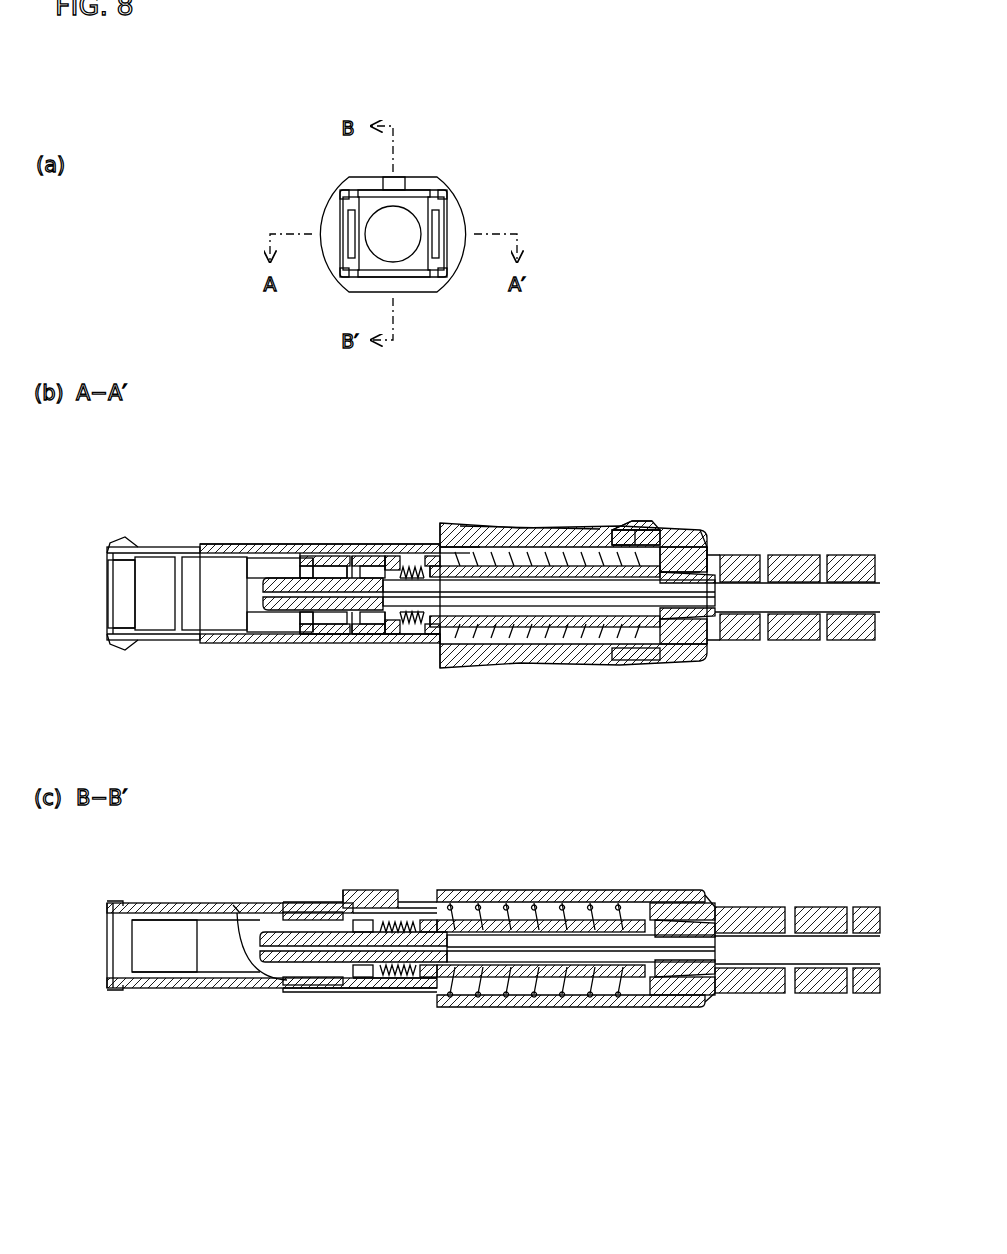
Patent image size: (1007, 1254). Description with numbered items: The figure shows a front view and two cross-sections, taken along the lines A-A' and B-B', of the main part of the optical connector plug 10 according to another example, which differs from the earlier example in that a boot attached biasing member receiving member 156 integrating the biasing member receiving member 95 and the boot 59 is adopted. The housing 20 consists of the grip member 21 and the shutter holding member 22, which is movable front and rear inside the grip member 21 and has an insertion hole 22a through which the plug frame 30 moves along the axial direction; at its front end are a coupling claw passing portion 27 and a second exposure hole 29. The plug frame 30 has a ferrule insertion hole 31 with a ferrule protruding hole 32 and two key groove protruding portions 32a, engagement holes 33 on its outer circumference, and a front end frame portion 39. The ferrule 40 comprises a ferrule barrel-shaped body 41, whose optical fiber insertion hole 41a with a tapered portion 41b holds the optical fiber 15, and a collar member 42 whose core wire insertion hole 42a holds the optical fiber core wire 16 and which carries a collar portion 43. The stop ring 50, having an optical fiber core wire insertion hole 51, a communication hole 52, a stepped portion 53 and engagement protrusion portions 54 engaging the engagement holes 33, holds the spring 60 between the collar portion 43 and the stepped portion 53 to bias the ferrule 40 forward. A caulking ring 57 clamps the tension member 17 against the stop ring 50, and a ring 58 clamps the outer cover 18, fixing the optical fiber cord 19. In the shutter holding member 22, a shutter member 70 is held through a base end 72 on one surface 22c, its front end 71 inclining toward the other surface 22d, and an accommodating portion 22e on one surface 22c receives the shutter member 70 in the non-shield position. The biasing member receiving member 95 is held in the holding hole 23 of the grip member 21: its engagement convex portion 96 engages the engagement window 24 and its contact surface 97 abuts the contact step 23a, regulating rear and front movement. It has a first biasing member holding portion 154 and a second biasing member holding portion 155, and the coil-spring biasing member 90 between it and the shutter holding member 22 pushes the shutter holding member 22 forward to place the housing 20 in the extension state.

The optical connector plug 10 is at (232, 437).
The optical fiber 15 is at (280, 611).
The optical fiber core wire 16 is at (520, 607).
The tension member 17 is at (728, 556).
The outer cover 18 is at (775, 556).
The optical fiber cord 19 is at (840, 556).
The housing 20 is at (443, 444).
The grip member 21 is at (447, 523).
The shutter holding member 22 is at (296, 545).
The insertion hole 22a is at (227, 567).
The one surface 22c is at (227, 979).
The other surface 22d is at (207, 912).
The accommodating portion 22e is at (193, 978).
The holding hole 23 is at (623, 523).
The contact step 23a is at (624, 529).
The engagement window 24 is at (652, 528).
The coupling claw passing portion 27 is at (120, 632).
The second exposure hole 29 is at (162, 637).
The plug frame 30 is at (356, 622).
The ferrule insertion hole 31 is at (388, 560).
The ferrule protruding hole 32 is at (343, 546).
The key groove protruding portion 32a is at (363, 556).
The engagement hole 33 is at (456, 546).
The front end frame portion 39 is at (300, 978).
The ferrule 40 is at (407, 728).
The ferrule barrel-shaped body 41 is at (340, 634).
The optical fiber insertion hole 41a is at (330, 622).
The tapered portion 41b is at (378, 627).
The collar member 42 is at (385, 642).
The core wire insertion hole 42a is at (443, 630).
The collar portion 43 is at (360, 982).
The stop ring 50 is at (488, 628).
The optical fiber core wire insertion hole 51 is at (555, 545).
The communication hole 52 is at (400, 556).
The stepped portion 53 is at (418, 566).
The engagement protrusion portion 54 is at (468, 548).
The caulking ring 57 is at (668, 538).
The ring 58 is at (712, 546).
The boot 59 is at (783, 641).
The spring 60 is at (415, 628).
The shutter member 70 is at (250, 930).
The front end 71 is at (237, 912).
The base end 72 is at (353, 988).
The biasing member 90 is at (519, 528).
The biasing member receiving member 95 is at (700, 531).
The engagement convex portion 96 is at (673, 538).
The contact surface 97 is at (635, 537).
The first biasing member holding portion 154 is at (573, 548).
The second biasing member holding portion 155 is at (662, 532).
The boot attached biasing member receiving member 156 is at (809, 556).